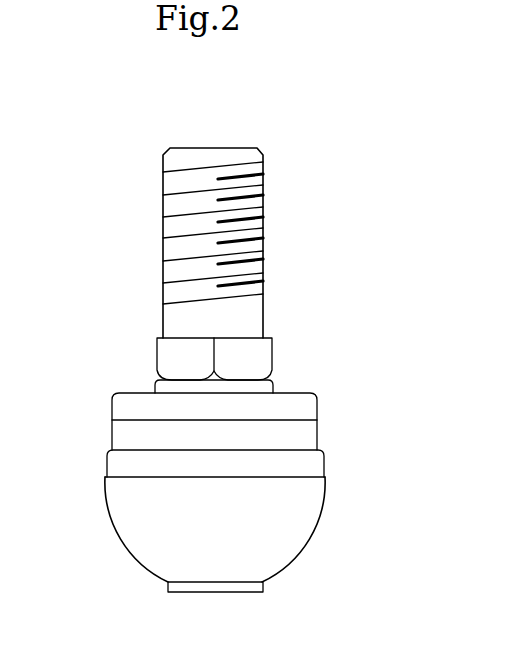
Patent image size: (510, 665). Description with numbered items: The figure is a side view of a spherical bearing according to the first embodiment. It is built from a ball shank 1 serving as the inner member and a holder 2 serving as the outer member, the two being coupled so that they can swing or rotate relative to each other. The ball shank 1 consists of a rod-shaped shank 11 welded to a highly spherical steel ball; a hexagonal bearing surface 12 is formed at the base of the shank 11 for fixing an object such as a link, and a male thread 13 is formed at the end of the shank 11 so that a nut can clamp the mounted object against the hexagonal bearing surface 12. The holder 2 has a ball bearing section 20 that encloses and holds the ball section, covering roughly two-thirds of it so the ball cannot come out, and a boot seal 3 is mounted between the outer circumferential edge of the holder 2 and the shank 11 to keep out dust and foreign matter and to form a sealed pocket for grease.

The ball shank 1 is at (212, 221).
The shank 11 is at (226, 150).
The male thread 13 is at (163, 230).
The hexagonal bearing surface 12 is at (157, 358).
The boot seal 3 is at (317, 408).
The holder 2 is at (215, 534).
The ball bearing section 20 is at (140, 540).